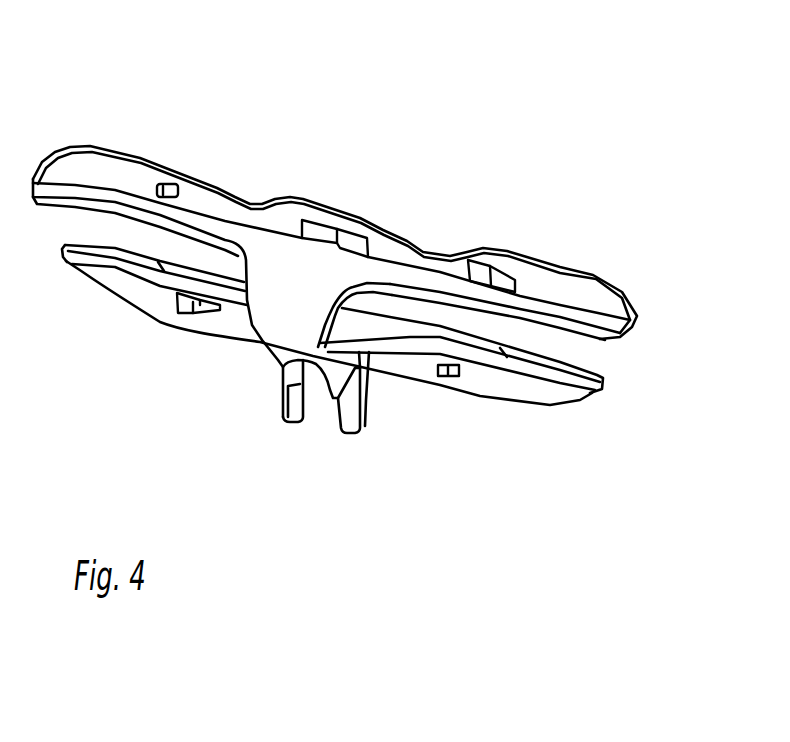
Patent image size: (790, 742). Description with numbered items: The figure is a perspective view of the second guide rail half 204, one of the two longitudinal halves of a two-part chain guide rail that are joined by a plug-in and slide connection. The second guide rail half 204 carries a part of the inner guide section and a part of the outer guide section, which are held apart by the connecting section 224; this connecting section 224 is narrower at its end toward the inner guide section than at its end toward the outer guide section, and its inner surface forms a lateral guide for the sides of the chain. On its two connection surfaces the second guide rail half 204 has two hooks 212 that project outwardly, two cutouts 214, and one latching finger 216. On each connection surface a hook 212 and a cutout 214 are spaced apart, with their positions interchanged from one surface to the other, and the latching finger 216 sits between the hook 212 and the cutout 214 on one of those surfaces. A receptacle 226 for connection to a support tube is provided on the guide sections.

The second guide rail half 204 is at (444, 231).
The hooks 212 is at (168, 184).
The cutouts 214 is at (483, 270).
The latching finger 216 is at (321, 222).
The connecting section 224 is at (280, 303).
The receptacle 226 is at (318, 418).